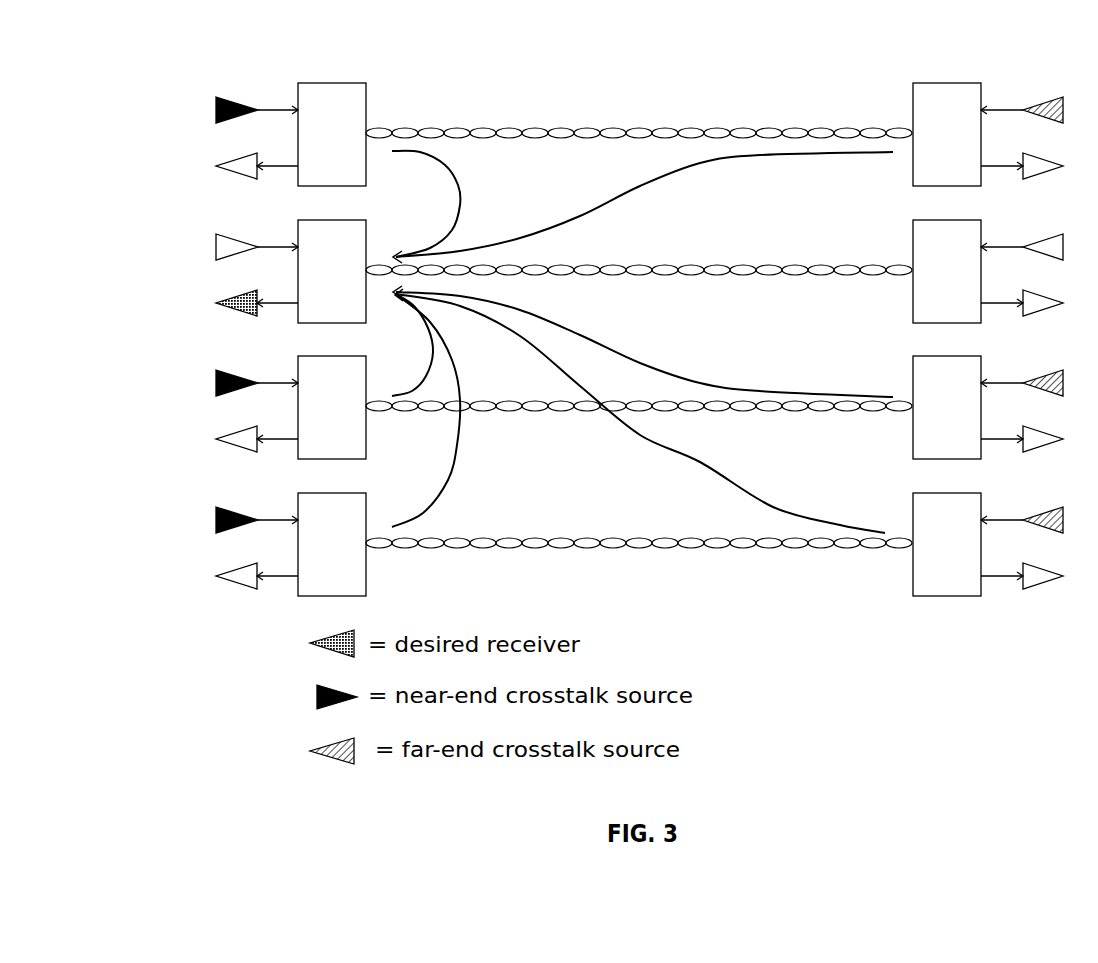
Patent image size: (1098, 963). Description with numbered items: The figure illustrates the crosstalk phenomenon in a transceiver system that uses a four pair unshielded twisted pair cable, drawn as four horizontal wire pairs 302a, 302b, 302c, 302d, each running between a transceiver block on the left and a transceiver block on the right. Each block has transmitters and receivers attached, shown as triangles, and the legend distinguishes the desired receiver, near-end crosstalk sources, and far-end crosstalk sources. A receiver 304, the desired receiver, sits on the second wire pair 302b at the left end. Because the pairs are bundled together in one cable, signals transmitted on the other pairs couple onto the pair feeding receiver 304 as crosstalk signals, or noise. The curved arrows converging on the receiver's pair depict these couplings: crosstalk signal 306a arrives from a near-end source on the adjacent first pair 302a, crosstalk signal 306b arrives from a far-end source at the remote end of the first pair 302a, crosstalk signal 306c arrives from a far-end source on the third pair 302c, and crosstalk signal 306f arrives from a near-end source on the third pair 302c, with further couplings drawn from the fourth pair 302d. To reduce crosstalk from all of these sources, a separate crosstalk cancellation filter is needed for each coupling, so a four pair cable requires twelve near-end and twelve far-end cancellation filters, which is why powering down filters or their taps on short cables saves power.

The wire pair 302a is at (845, 137).
The wire pair 302b is at (830, 270).
The wire pair 302c is at (847, 407).
The wire pair 302d is at (890, 543).
The receiver 304 is at (220, 303).
The crosstalk signal 306a is at (455, 188).
The crosstalk signal 306b is at (693, 165).
The crosstalk signal 306c is at (742, 390).
The crosstalk signal 306f is at (418, 383).